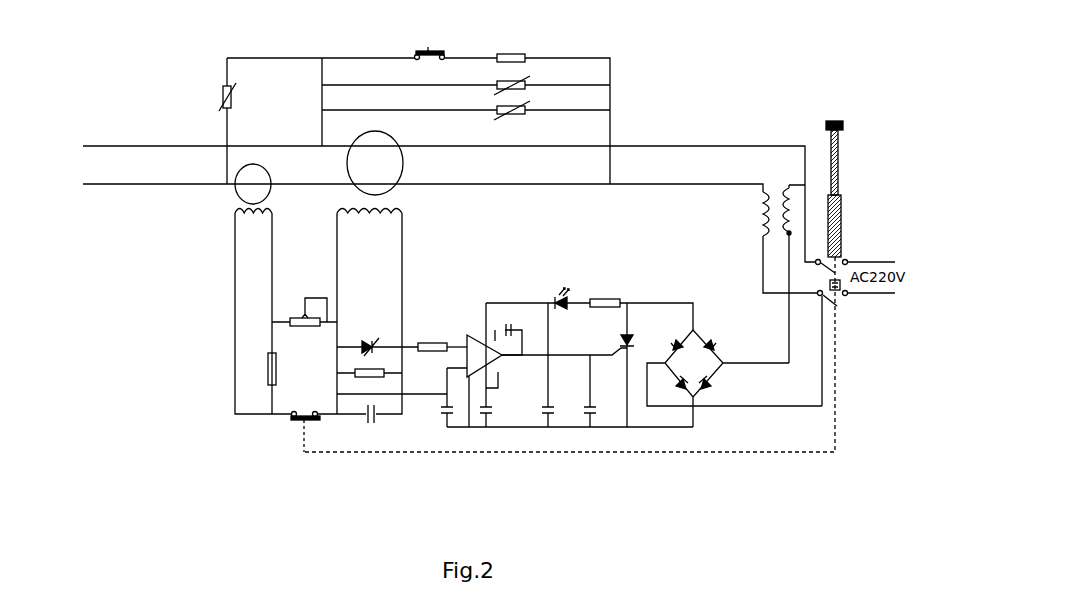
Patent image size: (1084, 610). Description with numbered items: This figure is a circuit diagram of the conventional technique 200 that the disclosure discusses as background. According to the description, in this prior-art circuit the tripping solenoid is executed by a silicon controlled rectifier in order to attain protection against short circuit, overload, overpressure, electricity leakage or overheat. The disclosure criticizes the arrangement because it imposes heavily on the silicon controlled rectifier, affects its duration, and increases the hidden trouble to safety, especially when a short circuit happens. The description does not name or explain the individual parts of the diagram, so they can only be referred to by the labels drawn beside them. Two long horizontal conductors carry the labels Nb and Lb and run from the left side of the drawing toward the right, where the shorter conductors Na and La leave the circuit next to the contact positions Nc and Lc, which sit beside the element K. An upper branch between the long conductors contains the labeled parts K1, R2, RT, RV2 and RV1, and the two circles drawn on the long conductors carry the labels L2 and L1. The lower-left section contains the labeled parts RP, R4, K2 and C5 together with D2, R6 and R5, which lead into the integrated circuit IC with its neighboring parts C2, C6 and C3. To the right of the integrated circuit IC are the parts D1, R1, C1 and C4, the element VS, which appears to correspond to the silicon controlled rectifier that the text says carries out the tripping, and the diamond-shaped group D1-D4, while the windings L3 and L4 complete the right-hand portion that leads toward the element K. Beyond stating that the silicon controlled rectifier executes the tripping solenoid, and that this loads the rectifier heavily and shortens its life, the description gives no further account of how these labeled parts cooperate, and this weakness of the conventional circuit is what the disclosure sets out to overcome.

The protection circuit 200 is at (891, 442).
The switch K1 is at (423, 47).
The resistor R2 is at (511, 51).
The thermistor RT is at (495, 88).
The varistor RV2 is at (494, 111).
The varistor RV1 is at (235, 100).
The current transformer coil L2 is at (252, 289).
The current transformer coil L1 is at (360, 272).
The relay coil L3 is at (785, 242).
The relay coil L4 is at (793, 265).
The relay K is at (579, 286).
The neutral input line Nb is at (438, 202).
The live input line Lb is at (412, 186).
The neutral relay contact Nc is at (820, 258).
The live relay contact Lc is at (821, 349).
The neutral output terminal Na is at (869, 250).
The live output terminal La is at (869, 307).
The potentiometer RP is at (304, 312).
The resistor R4 is at (263, 369).
The switch K2 is at (305, 424).
The capacitor C5 is at (362, 420).
The zener diode D2 is at (377, 342).
The resistor R6 is at (442, 340).
The resistor R5 is at (369, 367).
The operational amplifier IC is at (490, 359).
The capacitor C2 is at (509, 323).
The capacitor C6 is at (438, 397).
The capacitor C3 is at (493, 365).
The light emitting diode D1 is at (549, 308).
The resistor R1 is at (605, 296).
The capacitor C1 is at (555, 365).
The capacitor C4 is at (597, 391).
The thyristor VS is at (632, 365).
The rectifier bridge D1-D4 is at (734, 368).